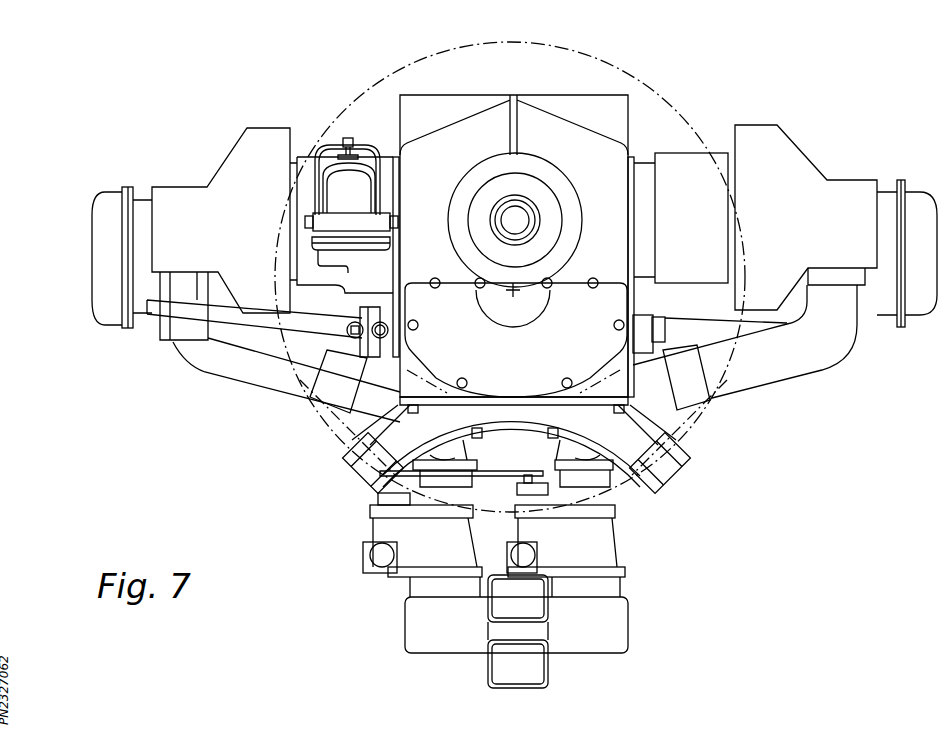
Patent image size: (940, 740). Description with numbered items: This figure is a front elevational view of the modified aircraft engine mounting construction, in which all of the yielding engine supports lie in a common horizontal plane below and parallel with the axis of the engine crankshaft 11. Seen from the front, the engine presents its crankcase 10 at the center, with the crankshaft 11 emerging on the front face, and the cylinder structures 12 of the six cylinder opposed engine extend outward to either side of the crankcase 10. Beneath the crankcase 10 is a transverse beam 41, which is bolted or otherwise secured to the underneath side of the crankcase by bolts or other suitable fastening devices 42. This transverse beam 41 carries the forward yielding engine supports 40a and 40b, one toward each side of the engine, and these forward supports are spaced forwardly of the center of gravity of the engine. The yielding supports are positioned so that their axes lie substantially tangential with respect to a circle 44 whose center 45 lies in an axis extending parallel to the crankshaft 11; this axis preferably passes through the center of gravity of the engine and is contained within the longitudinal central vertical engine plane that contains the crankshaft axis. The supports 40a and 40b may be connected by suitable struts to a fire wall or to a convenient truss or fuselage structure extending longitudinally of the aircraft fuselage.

The crankcase 10 is at (447, 100).
The crankshaft 11 is at (518, 218).
The cylinder structures 12 is at (175, 187).
The forward yielding engine support 40a is at (355, 471).
The forward yielding engine support 40b is at (690, 455).
The transverse beam 41 is at (572, 370).
The bolts 42 is at (413, 404).
The circle 44 is at (300, 368).
The center 45 is at (522, 292).